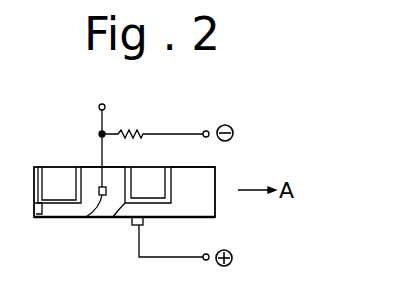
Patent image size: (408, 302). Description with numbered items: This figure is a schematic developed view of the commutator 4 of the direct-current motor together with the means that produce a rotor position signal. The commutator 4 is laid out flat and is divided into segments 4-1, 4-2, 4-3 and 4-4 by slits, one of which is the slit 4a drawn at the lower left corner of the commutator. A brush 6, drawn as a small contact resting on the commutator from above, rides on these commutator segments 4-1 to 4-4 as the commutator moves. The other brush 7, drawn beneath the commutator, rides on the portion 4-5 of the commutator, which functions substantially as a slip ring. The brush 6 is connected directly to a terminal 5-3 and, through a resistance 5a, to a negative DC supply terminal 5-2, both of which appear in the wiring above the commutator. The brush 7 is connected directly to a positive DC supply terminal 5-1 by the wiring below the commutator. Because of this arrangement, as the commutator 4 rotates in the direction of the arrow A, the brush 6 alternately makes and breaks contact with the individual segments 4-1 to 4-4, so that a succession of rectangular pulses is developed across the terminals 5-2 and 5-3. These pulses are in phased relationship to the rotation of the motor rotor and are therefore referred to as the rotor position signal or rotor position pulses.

The commutator 4 is at (216, 195).
The commutator segment 4-1 is at (52, 175).
The commutator segment 4-2 is at (113, 180).
The commutator segment 4-3 is at (152, 176).
The commutator segment 4-4 is at (213, 171).
The slip ring portion of commutator 4-5 is at (122, 218).
The slit 4a is at (38, 218).
The positive DC supply terminal 5-1 is at (205, 261).
The negative DC supply terminal 5-2 is at (206, 130).
The terminal 5-3 is at (105, 105).
The resistance 5a is at (140, 132).
The brush 6 is at (84, 218).
The brush 7 is at (143, 226).